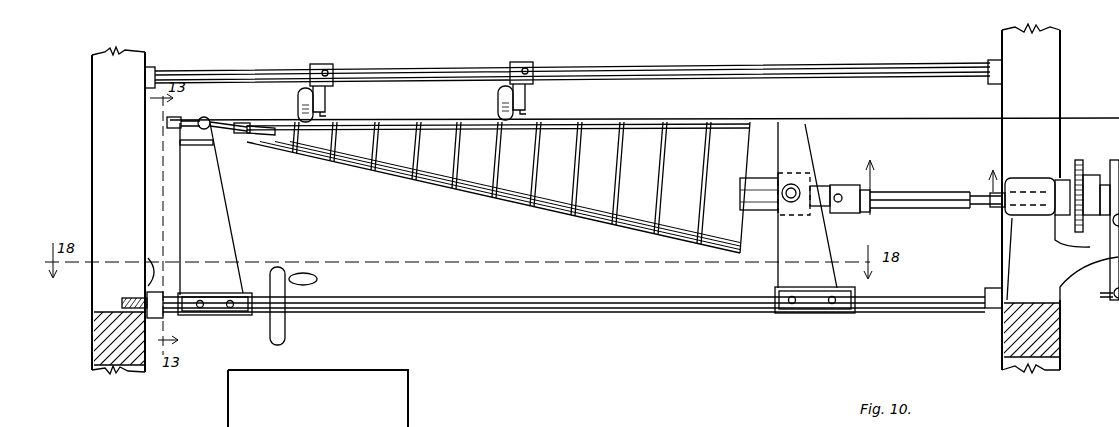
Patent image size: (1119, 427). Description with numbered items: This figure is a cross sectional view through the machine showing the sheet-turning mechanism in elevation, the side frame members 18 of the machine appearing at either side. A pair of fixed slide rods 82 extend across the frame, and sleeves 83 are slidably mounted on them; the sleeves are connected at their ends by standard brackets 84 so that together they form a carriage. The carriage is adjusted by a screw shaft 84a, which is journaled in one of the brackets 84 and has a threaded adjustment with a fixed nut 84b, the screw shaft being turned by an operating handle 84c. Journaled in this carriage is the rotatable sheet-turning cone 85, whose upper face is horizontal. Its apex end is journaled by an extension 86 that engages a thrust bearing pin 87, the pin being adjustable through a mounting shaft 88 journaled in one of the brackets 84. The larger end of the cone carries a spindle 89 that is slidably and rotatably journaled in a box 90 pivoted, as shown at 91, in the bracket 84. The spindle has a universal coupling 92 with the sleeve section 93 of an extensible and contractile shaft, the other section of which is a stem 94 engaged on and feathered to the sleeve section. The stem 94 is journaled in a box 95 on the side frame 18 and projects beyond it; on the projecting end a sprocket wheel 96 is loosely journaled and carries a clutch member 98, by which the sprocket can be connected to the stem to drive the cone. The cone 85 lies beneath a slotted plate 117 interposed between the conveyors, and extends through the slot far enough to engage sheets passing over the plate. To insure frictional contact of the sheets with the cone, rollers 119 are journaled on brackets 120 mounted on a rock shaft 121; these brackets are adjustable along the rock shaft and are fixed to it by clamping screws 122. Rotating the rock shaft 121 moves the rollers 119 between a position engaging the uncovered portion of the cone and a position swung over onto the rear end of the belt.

The support post / section line 18- 18 is at (92, 210).
The fixed slide rods 82 is at (926, 310).
The sleeves 83 is at (508, 312).
The standard brackets 84 is at (218, 218).
The screw shaft 84a is at (130, 297).
The fixed nut 84b is at (150, 262).
The operating handle 84c is at (282, 268).
The sheet-turning cone 85 is at (512, 201).
The extension 86 is at (268, 136).
The thrust bearing pin 87 is at (246, 133).
The mounting shaft 88 is at (205, 117).
The spindle 89 is at (750, 212).
The box 90 is at (792, 172).
The pivot 91 is at (797, 188).
The universal coupling 92 is at (840, 186).
The sleeve section 93 is at (920, 208).
The stem 94 is at (980, 195).
The box 95 is at (1035, 178).
The sprocket wheel 96 is at (1080, 160).
The clutch members 98 is at (1085, 222).
The plate 117 is at (1109, 117).
The rollers 119 is at (297, 101).
The brackets 120 is at (326, 94).
The rock shaft 121 is at (601, 72).
The clamping screws 122 is at (328, 66).